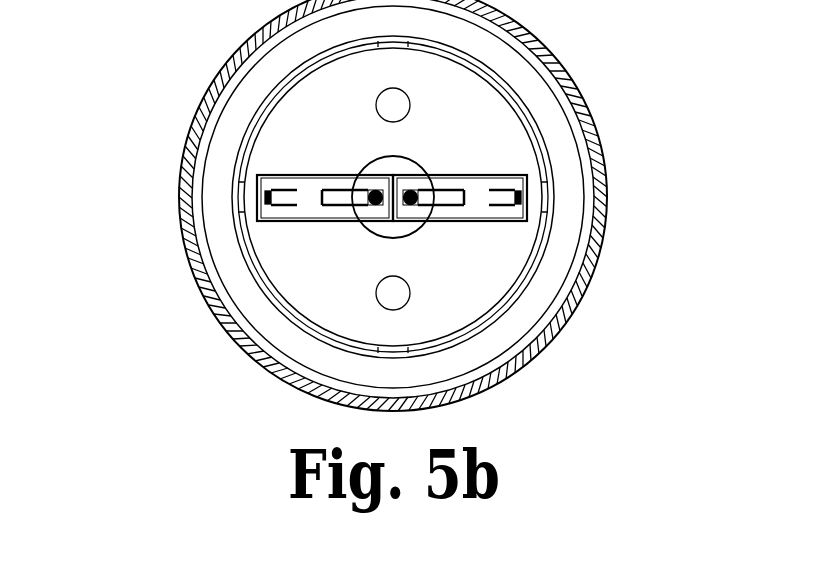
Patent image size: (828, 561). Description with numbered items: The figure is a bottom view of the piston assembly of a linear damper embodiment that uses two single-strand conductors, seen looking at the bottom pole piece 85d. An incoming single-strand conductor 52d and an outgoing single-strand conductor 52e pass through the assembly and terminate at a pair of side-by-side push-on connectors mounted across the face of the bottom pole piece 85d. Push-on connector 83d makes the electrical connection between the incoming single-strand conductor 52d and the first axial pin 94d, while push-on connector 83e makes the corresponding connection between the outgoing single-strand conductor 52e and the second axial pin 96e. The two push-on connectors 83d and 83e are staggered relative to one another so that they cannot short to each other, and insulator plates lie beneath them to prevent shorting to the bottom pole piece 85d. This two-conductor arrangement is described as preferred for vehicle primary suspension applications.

The outgoing single-strand conductor 52e is at (372, 190).
The incoming single-strand conductor 52d is at (417, 192).
The push-on connector 83e is at (308, 212).
The push-on connector 83d is at (461, 223).
The bottom pole piece 85d is at (471, 111).
The second axial pin 96e is at (262, 195).
The first axial pin 94d is at (520, 194).